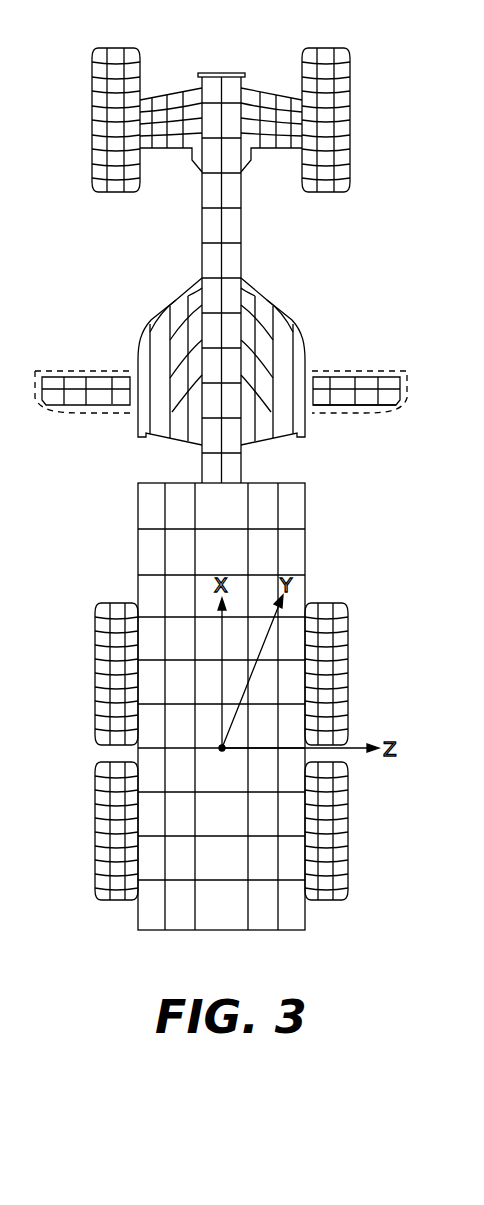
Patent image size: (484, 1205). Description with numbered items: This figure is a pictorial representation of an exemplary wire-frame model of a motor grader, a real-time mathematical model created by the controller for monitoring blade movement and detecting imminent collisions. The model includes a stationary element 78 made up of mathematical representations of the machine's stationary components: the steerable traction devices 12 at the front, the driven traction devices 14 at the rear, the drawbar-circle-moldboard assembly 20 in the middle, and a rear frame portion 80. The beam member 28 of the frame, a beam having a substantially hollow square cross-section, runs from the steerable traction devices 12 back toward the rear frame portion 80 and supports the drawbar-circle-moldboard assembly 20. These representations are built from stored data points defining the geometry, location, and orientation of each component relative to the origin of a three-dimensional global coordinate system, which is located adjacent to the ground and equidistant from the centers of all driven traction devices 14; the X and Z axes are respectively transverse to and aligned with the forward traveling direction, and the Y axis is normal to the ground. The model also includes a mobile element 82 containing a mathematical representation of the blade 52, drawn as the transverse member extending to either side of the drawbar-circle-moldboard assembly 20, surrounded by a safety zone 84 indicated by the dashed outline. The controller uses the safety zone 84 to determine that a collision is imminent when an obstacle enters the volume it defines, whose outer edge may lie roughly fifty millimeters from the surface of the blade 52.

The steerable traction device 12 is at (350, 148).
The driven traction device 14 is at (93, 673).
The drawbar-circle-moldboard assembly 20 is at (182, 300).
The beam member 28 is at (243, 218).
The blade 52 is at (364, 407).
The stationary element 78 is at (369, 106).
The rear frame portion 80 is at (305, 918).
The mobile element 82 is at (50, 363).
The safety zone 84 is at (378, 370).